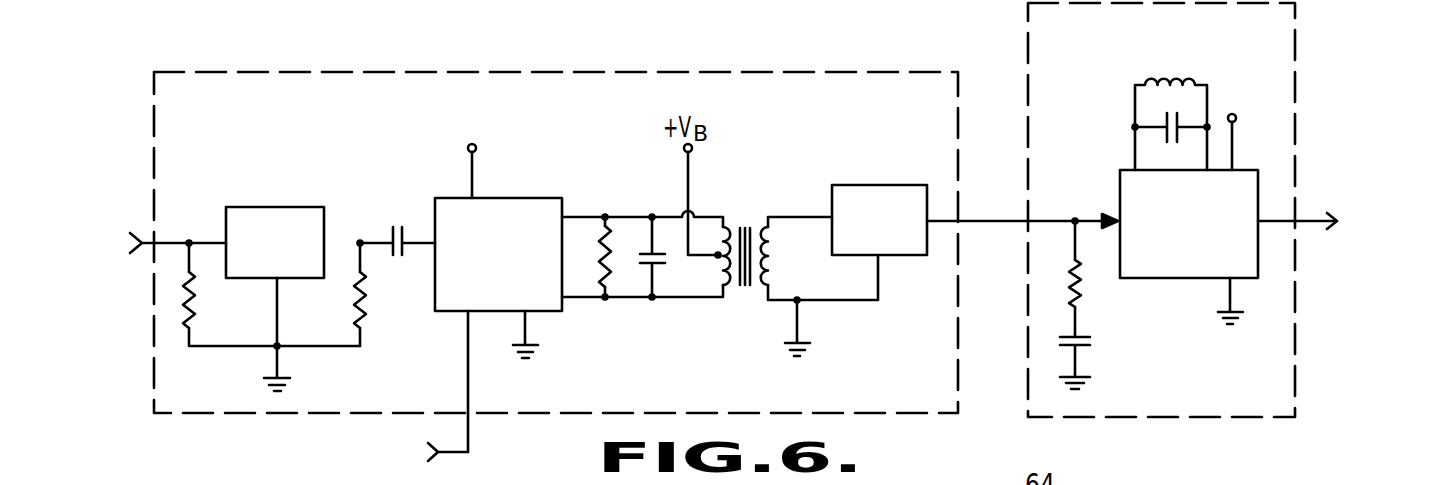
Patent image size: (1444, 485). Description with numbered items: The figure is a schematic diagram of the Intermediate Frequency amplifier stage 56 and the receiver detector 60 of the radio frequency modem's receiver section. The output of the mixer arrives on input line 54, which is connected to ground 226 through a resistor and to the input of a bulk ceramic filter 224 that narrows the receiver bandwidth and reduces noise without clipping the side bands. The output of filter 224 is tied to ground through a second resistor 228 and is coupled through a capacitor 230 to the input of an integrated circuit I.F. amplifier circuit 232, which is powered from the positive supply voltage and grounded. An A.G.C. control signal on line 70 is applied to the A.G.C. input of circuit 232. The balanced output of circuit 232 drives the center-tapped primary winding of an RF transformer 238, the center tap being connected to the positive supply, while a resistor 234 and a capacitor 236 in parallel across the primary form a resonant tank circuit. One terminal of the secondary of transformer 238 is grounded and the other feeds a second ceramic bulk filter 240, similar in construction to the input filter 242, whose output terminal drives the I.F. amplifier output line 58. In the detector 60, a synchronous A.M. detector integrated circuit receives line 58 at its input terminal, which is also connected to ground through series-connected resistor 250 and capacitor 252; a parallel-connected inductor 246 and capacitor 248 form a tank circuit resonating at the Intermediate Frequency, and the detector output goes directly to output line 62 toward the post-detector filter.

The input line 54 is at (140, 254).
The I.F. amplifier stage 56 is at (655, 72).
The I.F. amplifier output line 58 is at (993, 217).
The receiver detector 60 is at (1028, 20).
The output line 62 is at (1314, 227).
The A.G.C. line 70 is at (470, 442).
The filter 224 is at (302, 206).
The ground 226 is at (194, 305).
The second resistor 228 is at (354, 300).
The capacitor 230 is at (402, 213).
The integrated circuit I.F. amplifier circuit 232 is at (505, 197).
The resistor 234 is at (603, 273).
The capacitor 236 is at (663, 267).
The RF transformer 238 is at (748, 225).
The ceramic bulk filter 240 is at (883, 182).
The filter 242 is at (1190, 279).
The inductor 246 is at (1145, 80).
The capacitor 248 is at (1165, 120).
The resistor 250 is at (1080, 286).
The capacitor 252 is at (1092, 341).